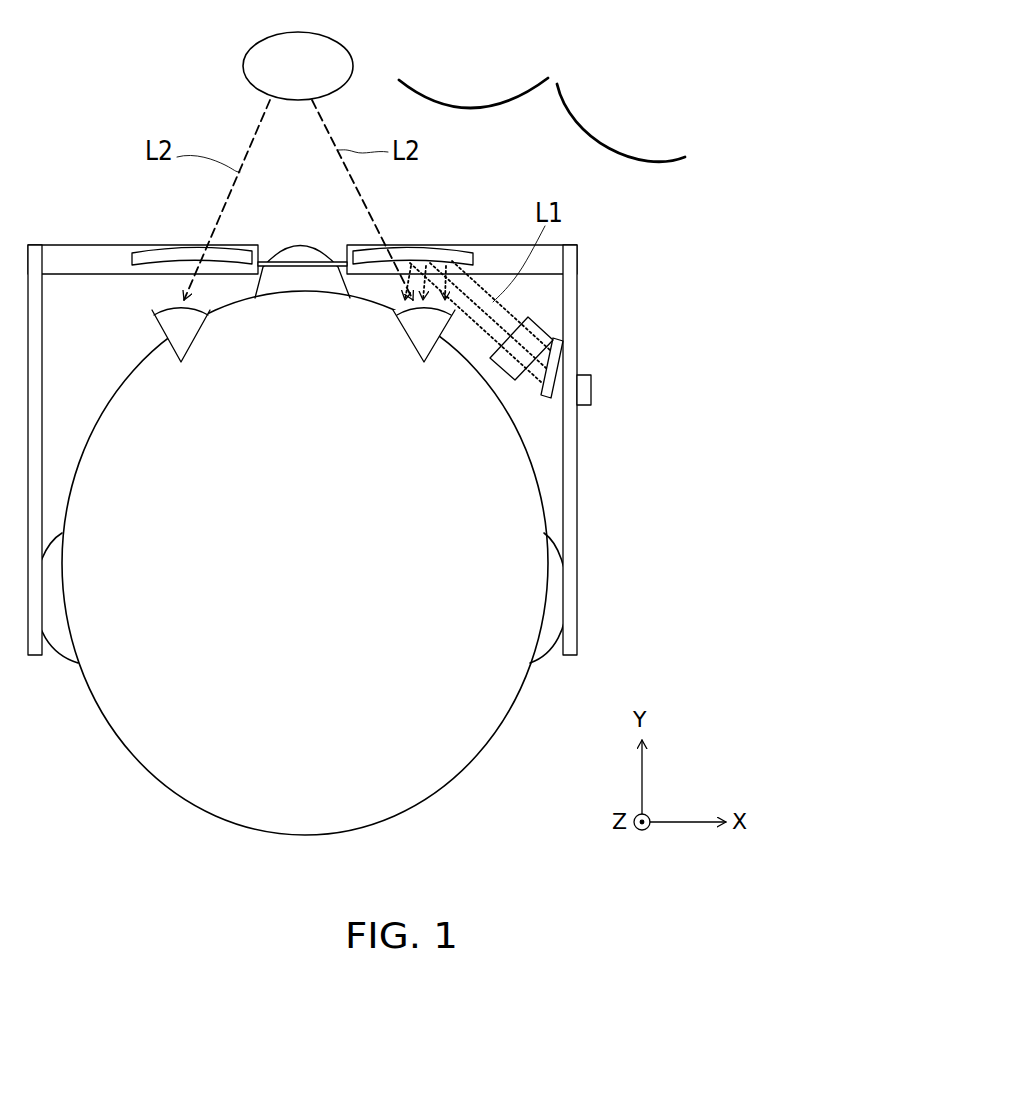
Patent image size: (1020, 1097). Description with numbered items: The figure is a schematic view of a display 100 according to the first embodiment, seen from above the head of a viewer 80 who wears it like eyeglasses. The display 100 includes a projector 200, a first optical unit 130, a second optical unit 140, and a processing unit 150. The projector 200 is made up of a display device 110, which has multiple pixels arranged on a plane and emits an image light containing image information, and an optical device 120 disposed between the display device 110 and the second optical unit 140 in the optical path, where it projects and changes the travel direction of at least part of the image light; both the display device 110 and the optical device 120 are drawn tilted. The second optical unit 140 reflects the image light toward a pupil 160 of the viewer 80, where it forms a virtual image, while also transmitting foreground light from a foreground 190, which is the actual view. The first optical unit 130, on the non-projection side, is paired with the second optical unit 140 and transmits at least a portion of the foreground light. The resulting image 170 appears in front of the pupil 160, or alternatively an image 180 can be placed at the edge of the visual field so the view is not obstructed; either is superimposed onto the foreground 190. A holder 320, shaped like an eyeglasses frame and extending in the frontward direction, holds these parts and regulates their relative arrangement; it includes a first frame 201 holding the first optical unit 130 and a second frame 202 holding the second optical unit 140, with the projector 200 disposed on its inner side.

The viewer 80 is at (143, 762).
The display 100 is at (735, 236).
The display device 110 is at (556, 336).
The optical device 120 is at (552, 314).
The first optical unit 130 is at (130, 258).
The second optical unit 140 is at (471, 258).
The processing unit 150 is at (592, 392).
The pupil 160 is at (412, 342).
The image 170 is at (452, 104).
The image 180 is at (585, 125).
The foreground 190 is at (243, 62).
The projector 200 is at (613, 341).
The first frame 201 is at (60, 258).
The second frame 202 is at (568, 263).
The holder 320 is at (570, 590).